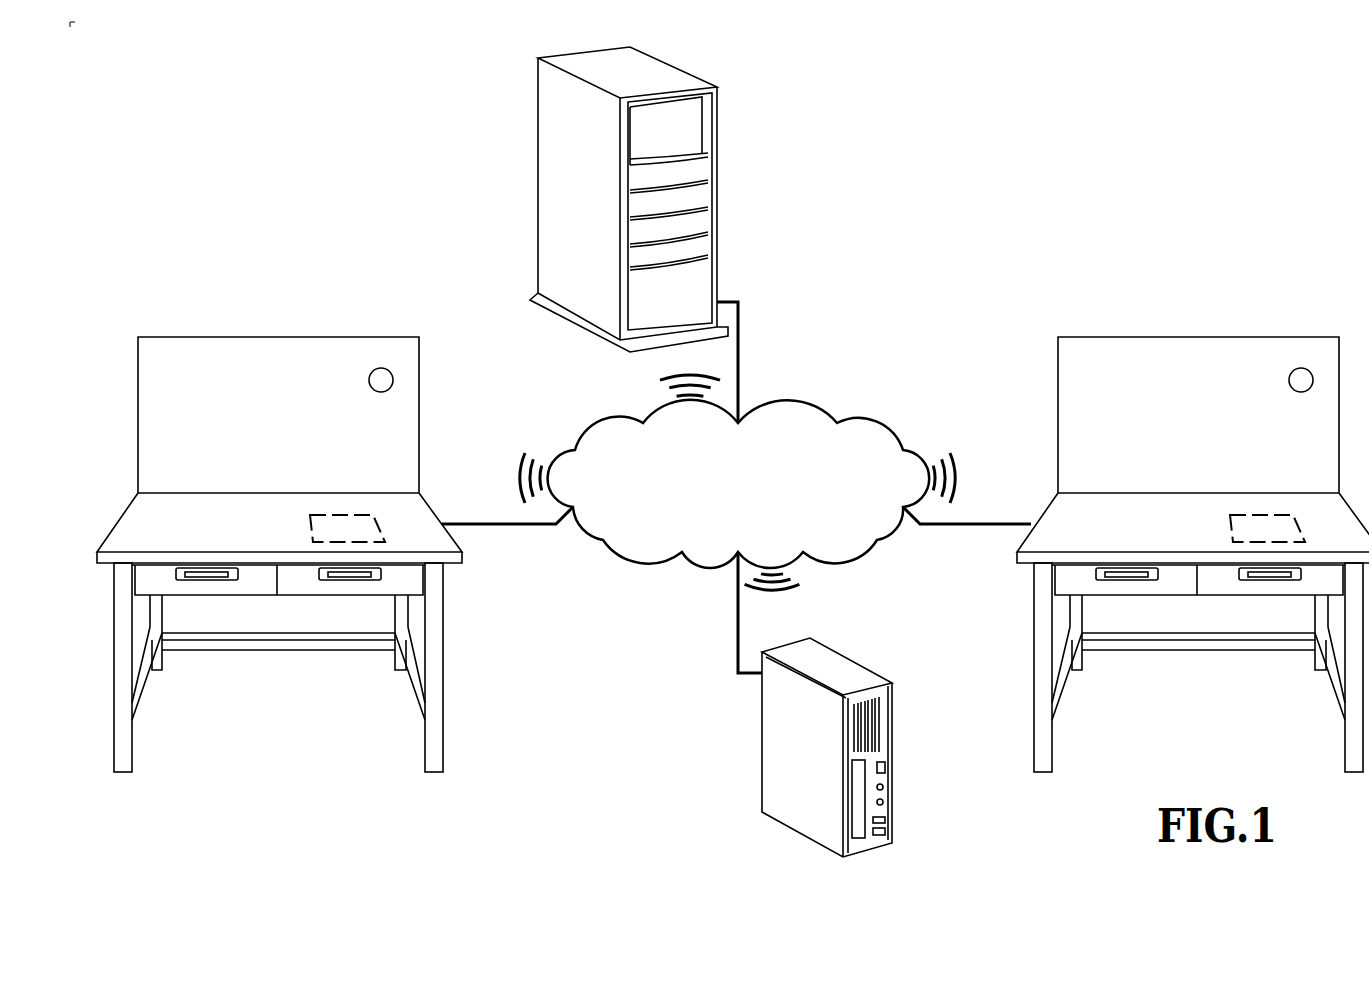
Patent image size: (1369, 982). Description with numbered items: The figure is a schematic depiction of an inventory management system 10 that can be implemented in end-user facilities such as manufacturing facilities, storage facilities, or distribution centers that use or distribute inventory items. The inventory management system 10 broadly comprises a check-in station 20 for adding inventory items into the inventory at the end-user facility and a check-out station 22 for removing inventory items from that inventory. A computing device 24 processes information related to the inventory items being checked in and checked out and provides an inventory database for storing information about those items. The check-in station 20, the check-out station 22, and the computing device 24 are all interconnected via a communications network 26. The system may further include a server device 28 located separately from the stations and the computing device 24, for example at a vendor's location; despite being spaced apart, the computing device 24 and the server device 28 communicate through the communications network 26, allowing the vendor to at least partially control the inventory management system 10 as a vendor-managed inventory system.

The inventory management system 10 is at (1186, 126).
The check-in station 20 is at (400, 296).
The check-out station 22 is at (1352, 296).
The computing device 24 is at (778, 722).
The communications network 26 is at (873, 437).
The server device 28 is at (553, 127).